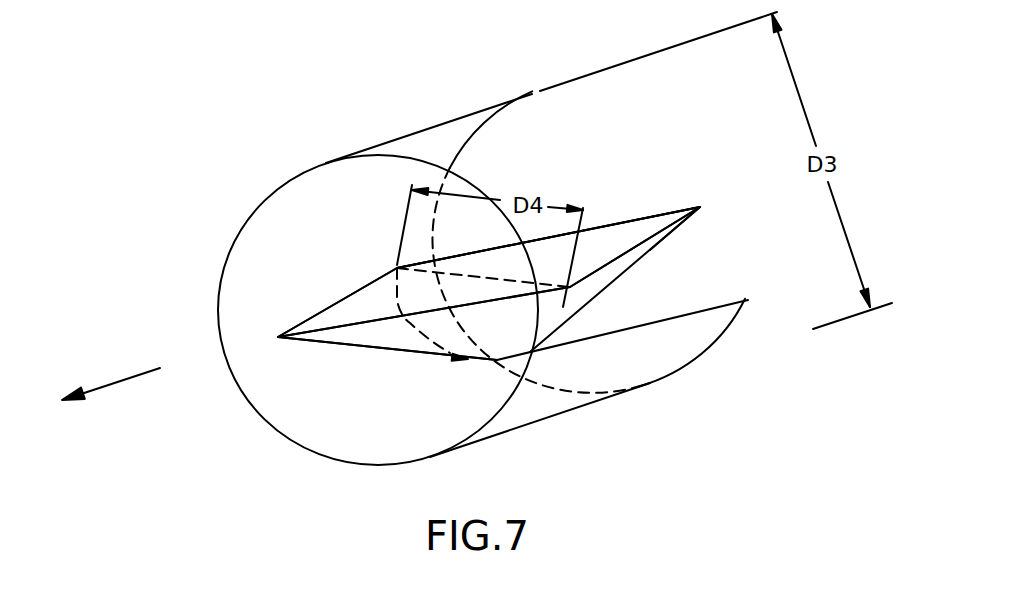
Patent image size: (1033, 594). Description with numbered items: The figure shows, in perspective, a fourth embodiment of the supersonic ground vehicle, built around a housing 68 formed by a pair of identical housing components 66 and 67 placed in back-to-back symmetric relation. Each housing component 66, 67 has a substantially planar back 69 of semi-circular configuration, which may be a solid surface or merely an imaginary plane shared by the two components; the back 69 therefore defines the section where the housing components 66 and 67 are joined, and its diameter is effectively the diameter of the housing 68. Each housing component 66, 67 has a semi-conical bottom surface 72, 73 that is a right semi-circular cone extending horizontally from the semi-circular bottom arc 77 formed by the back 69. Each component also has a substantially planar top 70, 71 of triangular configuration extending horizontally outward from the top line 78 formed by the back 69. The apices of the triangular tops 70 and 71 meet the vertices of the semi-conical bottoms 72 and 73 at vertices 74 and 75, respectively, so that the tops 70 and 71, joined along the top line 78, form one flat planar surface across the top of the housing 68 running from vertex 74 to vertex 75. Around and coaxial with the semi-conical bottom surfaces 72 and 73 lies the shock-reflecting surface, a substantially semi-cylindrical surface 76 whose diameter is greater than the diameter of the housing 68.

The housing component 66 is at (353, 307).
The housing component 67 is at (627, 234).
The housing 68 is at (754, 236).
The back 69 is at (443, 332).
The top 70 is at (382, 298).
The top 71 is at (602, 240).
The semi-conical bottom surface 72 is at (387, 345).
The semi-conical bottom surface 73 is at (613, 278).
The vertex 74 is at (278, 338).
The vertex 75 is at (705, 204).
The semi-cylindrical shock-reflecting surface 76 is at (540, 408).
The semi-circular bottom arc 77 is at (402, 307).
The top line 78 is at (479, 285).